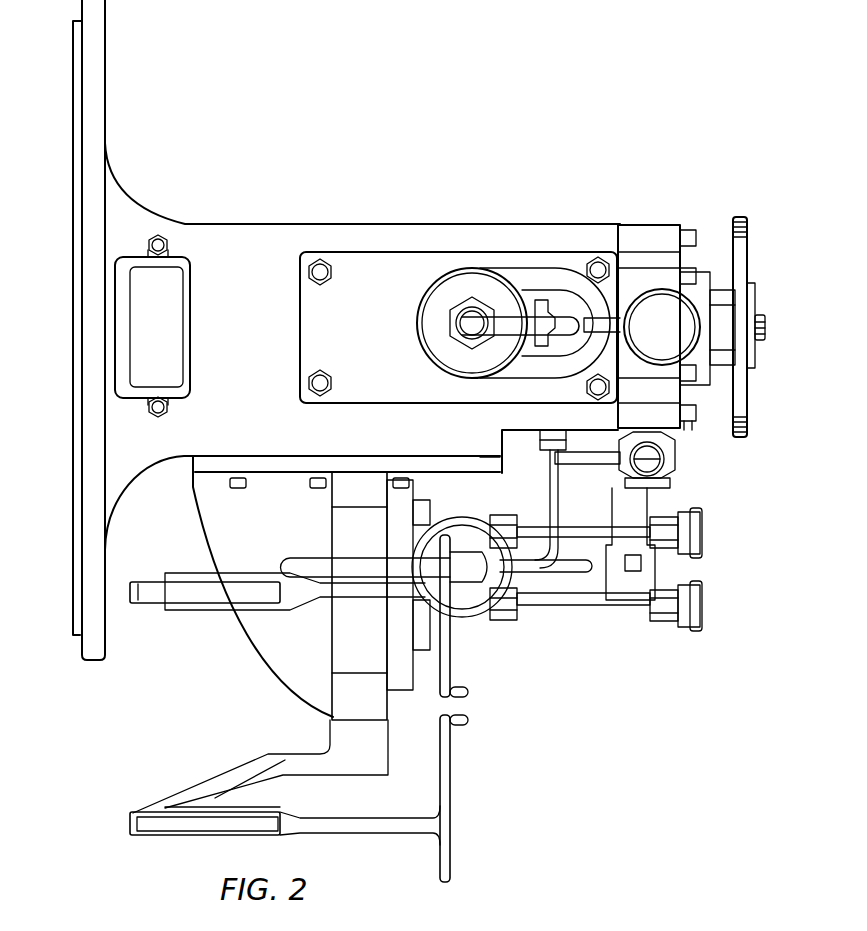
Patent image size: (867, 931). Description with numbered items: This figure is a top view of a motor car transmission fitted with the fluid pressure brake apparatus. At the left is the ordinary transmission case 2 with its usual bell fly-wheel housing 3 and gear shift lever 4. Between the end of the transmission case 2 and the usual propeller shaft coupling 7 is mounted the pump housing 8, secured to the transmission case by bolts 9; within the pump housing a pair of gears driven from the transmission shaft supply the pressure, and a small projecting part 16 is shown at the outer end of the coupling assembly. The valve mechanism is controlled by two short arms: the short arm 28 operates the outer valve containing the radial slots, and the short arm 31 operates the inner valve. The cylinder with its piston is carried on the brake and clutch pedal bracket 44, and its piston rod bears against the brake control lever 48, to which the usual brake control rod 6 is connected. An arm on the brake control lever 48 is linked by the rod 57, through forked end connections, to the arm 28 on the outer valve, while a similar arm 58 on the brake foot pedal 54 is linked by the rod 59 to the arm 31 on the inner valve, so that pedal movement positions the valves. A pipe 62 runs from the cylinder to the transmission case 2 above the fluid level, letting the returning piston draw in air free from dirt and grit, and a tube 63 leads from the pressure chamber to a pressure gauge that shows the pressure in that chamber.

The transmission case 2 is at (566, 234).
The bell fly-wheel housing 3 is at (109, 466).
The gear shift lever 4 is at (502, 327).
The brake control rod 6 is at (565, 569).
The propeller shaft coupling 7 is at (741, 440).
The pump housing 8 is at (659, 233).
The bolts 9 is at (688, 431).
The knob 16 is at (762, 315).
The short arm 28 is at (698, 530).
The short arm 31 is at (698, 605).
The brake and clutch pedal bracket 44 is at (281, 642).
The brake control lever 48 is at (306, 564).
The brake foot pedal 54 is at (185, 592).
The rod 57 is at (556, 531).
The arm 58 is at (483, 617).
The rod 59 is at (597, 601).
The pipe 62 is at (548, 523).
The tube 63 is at (562, 458).